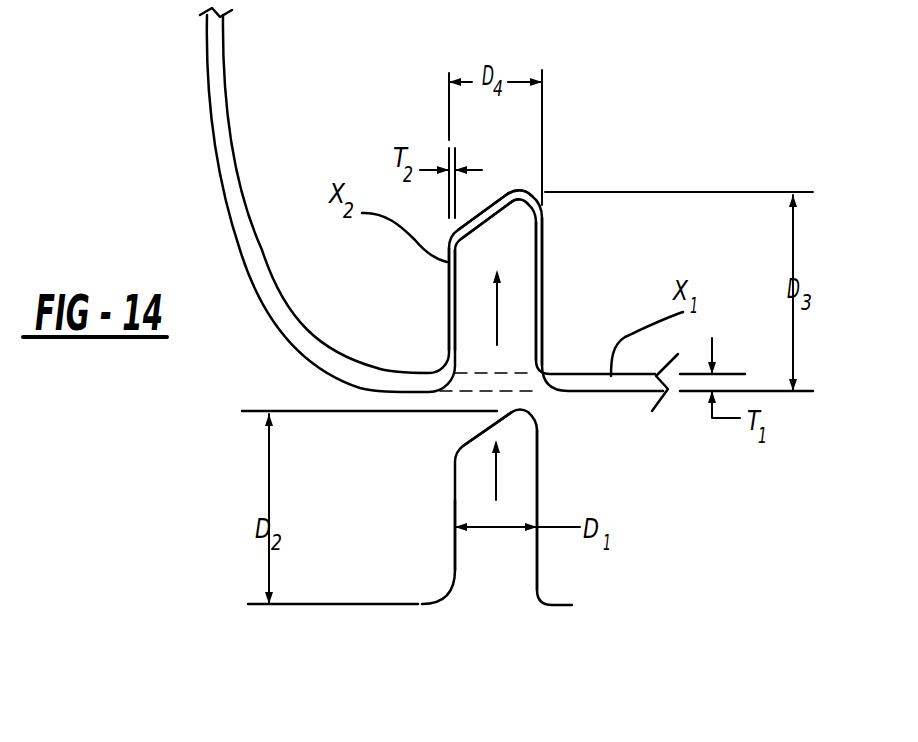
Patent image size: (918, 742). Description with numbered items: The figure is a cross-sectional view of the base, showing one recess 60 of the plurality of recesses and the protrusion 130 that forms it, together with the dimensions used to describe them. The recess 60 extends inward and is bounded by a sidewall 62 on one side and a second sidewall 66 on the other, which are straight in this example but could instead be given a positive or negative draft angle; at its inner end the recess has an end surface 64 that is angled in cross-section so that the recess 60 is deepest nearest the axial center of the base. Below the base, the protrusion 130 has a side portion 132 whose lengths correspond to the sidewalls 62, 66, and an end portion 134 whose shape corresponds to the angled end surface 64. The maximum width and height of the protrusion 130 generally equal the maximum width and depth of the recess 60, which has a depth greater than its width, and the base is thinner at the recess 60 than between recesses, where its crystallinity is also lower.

The recess 60 is at (536, 249).
The sidewall 62 is at (456, 313).
The end surface 64 is at (486, 216).
The second side wall 66 is at (536, 309).
The protrusion 130 is at (455, 493).
The side portion 132 is at (455, 556).
The end portion 134 is at (489, 422).